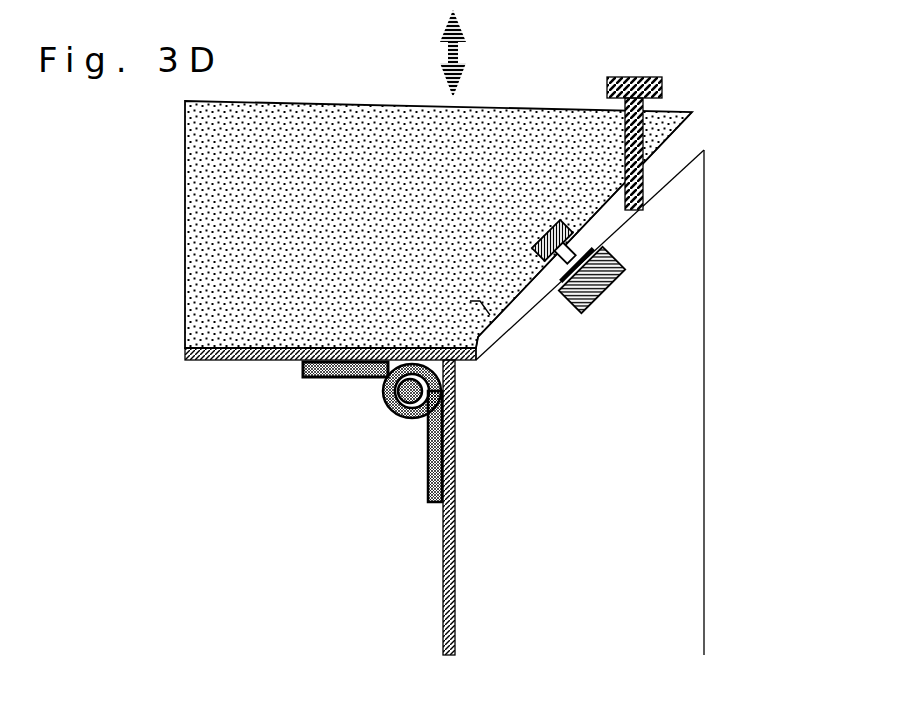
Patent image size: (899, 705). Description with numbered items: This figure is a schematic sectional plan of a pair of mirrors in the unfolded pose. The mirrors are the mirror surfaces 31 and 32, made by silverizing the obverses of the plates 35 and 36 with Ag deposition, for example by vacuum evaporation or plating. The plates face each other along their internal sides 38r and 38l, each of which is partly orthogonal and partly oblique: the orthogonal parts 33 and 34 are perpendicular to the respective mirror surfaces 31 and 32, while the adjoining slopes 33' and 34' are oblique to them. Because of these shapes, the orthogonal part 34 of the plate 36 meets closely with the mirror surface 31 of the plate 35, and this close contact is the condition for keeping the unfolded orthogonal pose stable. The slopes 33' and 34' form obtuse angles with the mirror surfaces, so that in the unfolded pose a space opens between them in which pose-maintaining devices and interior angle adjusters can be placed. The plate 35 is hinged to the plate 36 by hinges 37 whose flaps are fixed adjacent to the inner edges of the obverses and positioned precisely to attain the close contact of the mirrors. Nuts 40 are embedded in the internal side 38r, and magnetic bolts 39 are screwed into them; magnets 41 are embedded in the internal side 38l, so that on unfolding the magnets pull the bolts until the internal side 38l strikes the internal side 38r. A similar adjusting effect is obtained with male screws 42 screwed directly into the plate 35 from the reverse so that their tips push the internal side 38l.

The mirror surface 31 is at (305, 348).
The mirror surface 32 is at (453, 518).
The orthogonal part 33 is at (440, 334).
The slope 33' is at (465, 293).
The orthogonal part 34 is at (363, 387).
The slope 34' is at (585, 237).
The plate 35 is at (438, 224).
The plate 36 is at (627, 507).
The hinge 37 is at (428, 453).
The internal side 38r is at (673, 131).
The internal side 38l is at (678, 178).
The magnetic bolt 39 is at (592, 243).
The nut 40 is at (534, 248).
The magnet 41 is at (603, 300).
The male screw 42 is at (623, 76).